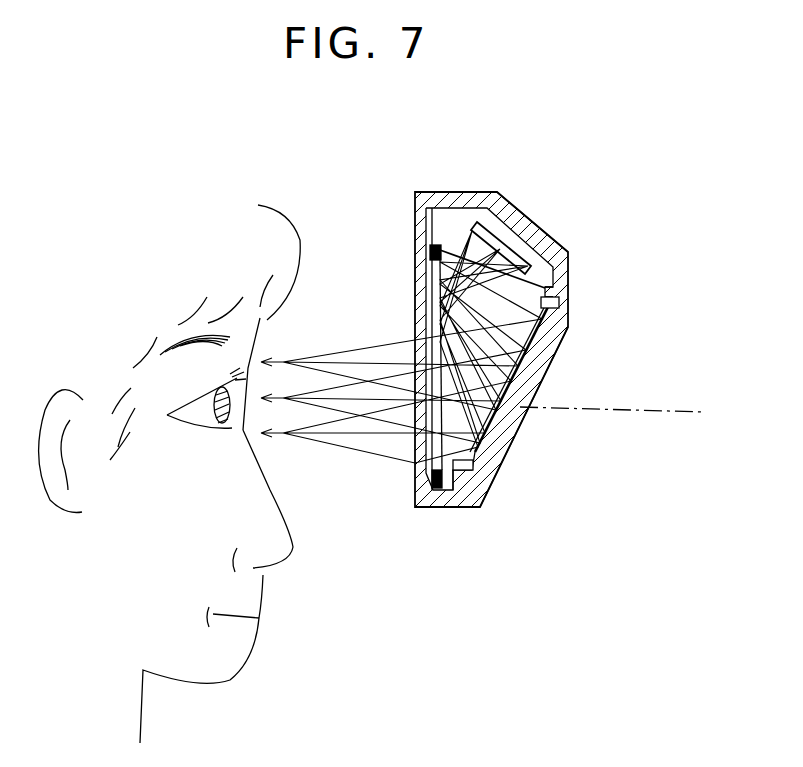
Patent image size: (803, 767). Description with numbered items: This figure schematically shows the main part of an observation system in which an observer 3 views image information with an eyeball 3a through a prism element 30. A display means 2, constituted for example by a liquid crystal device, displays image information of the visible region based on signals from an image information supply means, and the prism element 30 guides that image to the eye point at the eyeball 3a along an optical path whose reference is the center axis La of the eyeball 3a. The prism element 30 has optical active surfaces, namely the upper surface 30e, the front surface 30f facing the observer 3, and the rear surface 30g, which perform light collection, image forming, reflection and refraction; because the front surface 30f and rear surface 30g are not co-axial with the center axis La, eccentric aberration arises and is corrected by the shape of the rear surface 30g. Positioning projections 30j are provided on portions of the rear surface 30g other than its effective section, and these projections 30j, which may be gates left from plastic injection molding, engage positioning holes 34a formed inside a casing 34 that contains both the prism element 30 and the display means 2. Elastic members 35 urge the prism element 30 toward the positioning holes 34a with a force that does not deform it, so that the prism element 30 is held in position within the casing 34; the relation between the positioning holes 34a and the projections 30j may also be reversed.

The display means 2 is at (498, 233).
The observer 3 is at (190, 237).
The eyeball 3a is at (200, 423).
The prism element 30 is at (443, 245).
The upper surface 30e is at (543, 250).
The front surface 30f is at (440, 284).
The rear surface 30g is at (513, 383).
The positioning projections 30j is at (548, 300).
The casing 34 is at (497, 467).
The positioning holes 34a is at (560, 303).
The elastic members 35 is at (436, 250).
The center axis La is at (627, 410).